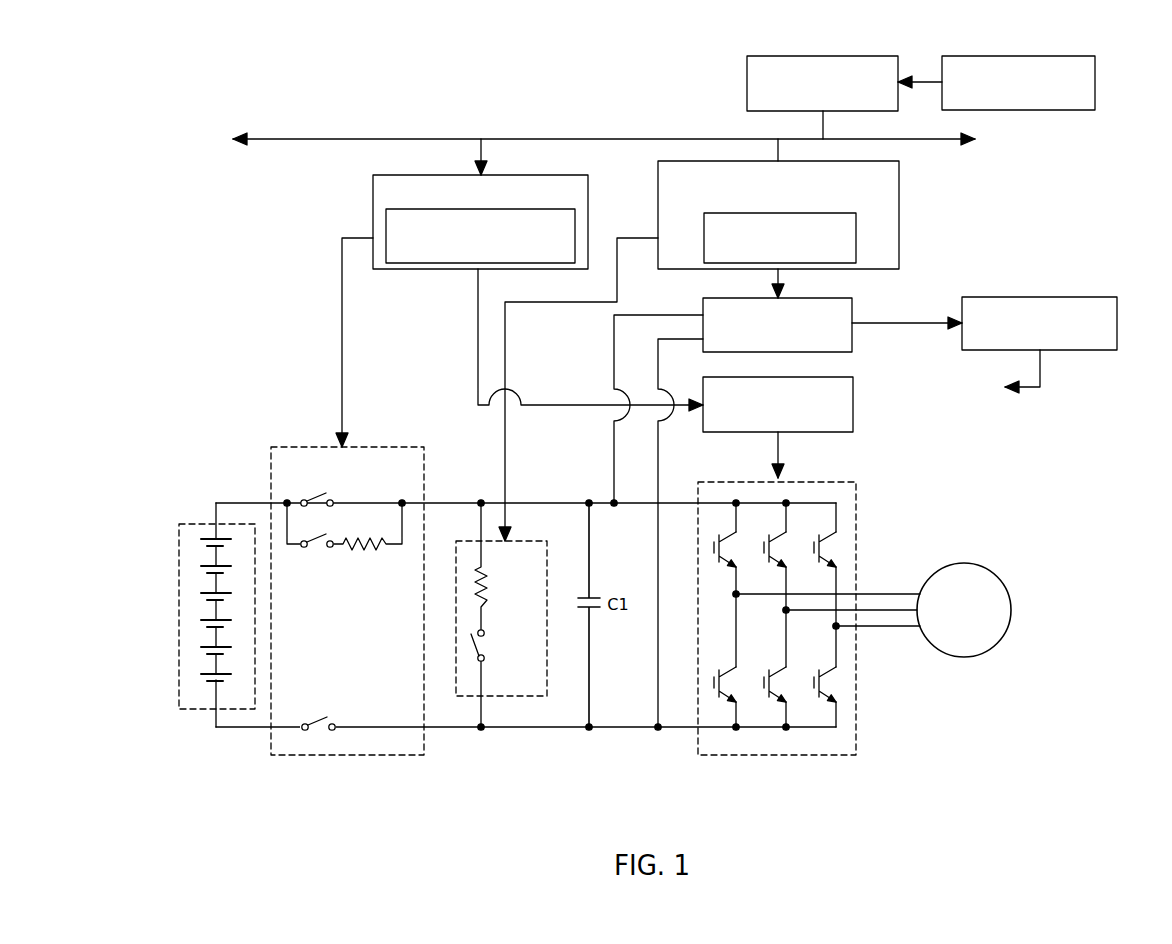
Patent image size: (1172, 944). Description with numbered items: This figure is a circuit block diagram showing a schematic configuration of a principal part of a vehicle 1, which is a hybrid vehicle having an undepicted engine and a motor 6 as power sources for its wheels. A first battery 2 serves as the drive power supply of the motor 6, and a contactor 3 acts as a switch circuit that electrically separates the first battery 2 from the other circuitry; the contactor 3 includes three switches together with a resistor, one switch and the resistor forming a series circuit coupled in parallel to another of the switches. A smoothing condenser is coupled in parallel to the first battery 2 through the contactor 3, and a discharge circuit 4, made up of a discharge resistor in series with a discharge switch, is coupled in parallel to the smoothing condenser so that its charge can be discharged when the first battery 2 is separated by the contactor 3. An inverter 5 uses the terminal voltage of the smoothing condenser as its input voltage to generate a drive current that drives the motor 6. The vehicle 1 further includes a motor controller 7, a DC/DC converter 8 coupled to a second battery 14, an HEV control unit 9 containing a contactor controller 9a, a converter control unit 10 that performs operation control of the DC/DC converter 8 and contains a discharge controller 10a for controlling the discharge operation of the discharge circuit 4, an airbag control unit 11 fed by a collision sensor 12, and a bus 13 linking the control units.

The vehicle 1 is at (1088, 834).
The first battery 2 is at (188, 524).
The contactor 3 is at (375, 757).
The discharge circuit 4 is at (528, 696).
The inverter 5 is at (823, 755).
The motor 6 is at (968, 563).
The motor controller 7 is at (853, 403).
The DC/DC converter 8 is at (852, 313).
The HEV control unit 9 is at (568, 175).
The contactor controller 9a is at (446, 270).
The converter control unit 10 is at (899, 203).
The discharge controller 10a is at (856, 231).
The airbag control unit 11 is at (747, 92).
The collision sensor 12 is at (1095, 88).
The bus 13 is at (268, 141).
The second battery 14 is at (1085, 297).